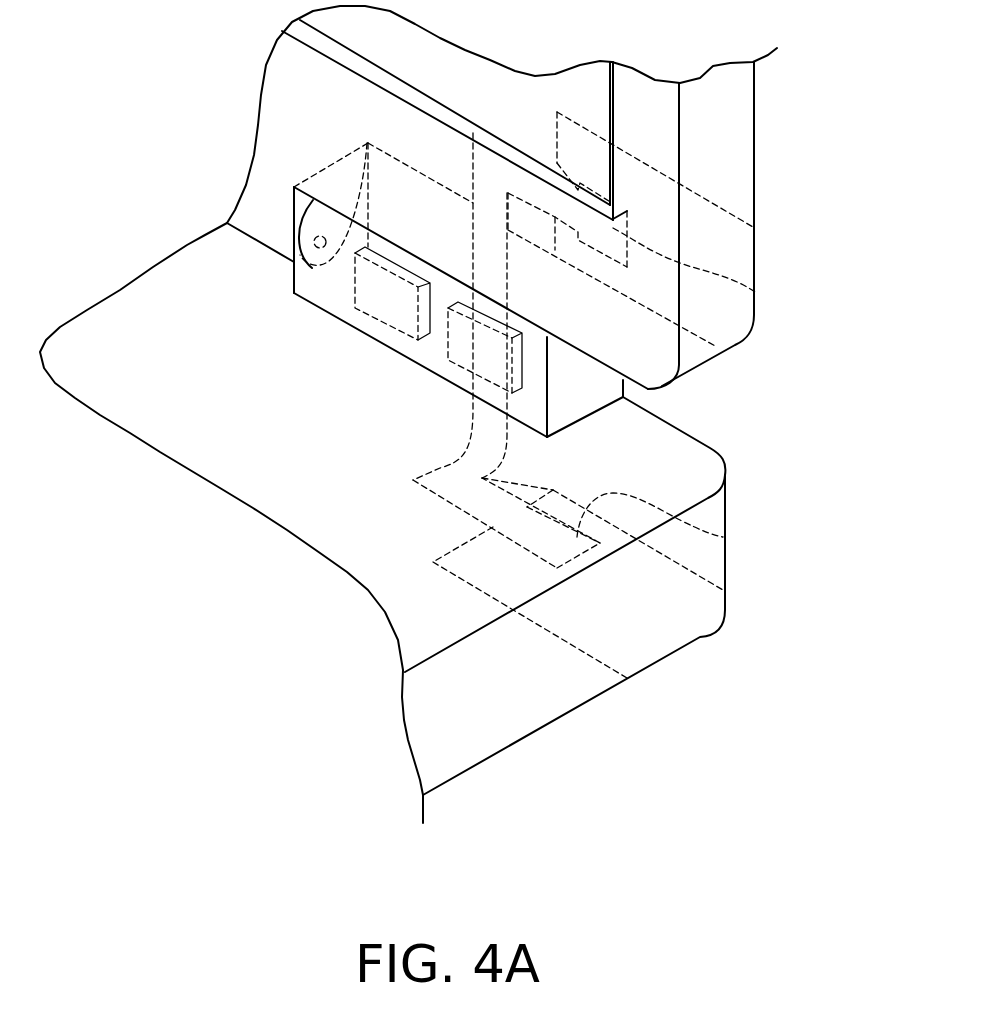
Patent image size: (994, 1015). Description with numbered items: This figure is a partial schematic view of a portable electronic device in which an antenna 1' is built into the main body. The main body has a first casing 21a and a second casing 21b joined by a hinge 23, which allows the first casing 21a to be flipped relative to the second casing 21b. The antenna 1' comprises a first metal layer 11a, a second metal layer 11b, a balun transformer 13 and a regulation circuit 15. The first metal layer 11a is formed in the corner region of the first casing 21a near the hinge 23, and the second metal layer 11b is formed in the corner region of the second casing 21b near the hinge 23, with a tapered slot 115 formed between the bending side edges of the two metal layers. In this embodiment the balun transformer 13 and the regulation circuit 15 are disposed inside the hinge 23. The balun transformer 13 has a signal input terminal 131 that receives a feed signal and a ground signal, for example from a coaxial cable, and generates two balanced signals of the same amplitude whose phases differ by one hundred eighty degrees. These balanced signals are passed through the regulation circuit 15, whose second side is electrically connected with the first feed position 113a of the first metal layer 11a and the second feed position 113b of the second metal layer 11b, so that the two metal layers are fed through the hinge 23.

The antenna 1' is at (393, 308).
The first metal layer 11a is at (737, 252).
The second metal layer 11b is at (648, 645).
The first feed position 113a is at (755, 292).
The second feed position 113b is at (723, 537).
The tapered slot 115 is at (735, 410).
The balun transformer 13 is at (397, 306).
The signal input terminal 131 is at (318, 236).
The regulation circuit 15 is at (473, 348).
The first casing 21a is at (743, 153).
The second casing 21b is at (508, 727).
The hinge 23 is at (330, 307).